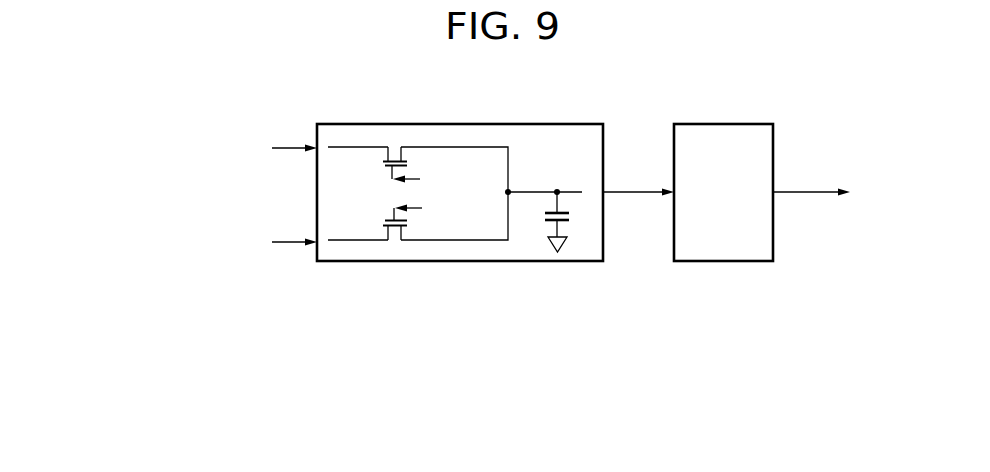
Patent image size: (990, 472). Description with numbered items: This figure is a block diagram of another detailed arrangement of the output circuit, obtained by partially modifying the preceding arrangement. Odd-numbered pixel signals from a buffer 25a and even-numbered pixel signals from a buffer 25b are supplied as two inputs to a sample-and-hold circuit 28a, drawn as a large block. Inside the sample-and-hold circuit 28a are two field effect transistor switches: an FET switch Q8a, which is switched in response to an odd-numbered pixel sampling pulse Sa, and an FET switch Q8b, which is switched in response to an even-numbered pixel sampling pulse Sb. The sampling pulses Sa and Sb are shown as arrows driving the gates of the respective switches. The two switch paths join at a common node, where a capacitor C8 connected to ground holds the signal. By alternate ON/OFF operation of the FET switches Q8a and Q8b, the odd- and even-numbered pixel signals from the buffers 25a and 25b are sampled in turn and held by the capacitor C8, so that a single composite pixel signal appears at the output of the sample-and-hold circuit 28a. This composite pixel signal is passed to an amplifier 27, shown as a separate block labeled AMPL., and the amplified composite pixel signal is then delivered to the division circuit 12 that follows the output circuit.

The sample-and-hold circuit 28a is at (487, 192).
The amplifier 27 is at (760, 228).
The capacitor C8 is at (545, 214).
The FET switch Q8a is at (386, 164).
The FET switch Q8b is at (387, 219).
The odd-numbered pixel sampling pulse Sa is at (424, 176).
The even-numbered pixel sampling pulse Sb is at (425, 207).
The buffer 25a is at (222, 135).
The buffer 25b is at (222, 229).
The division circuit 12 is at (867, 196).